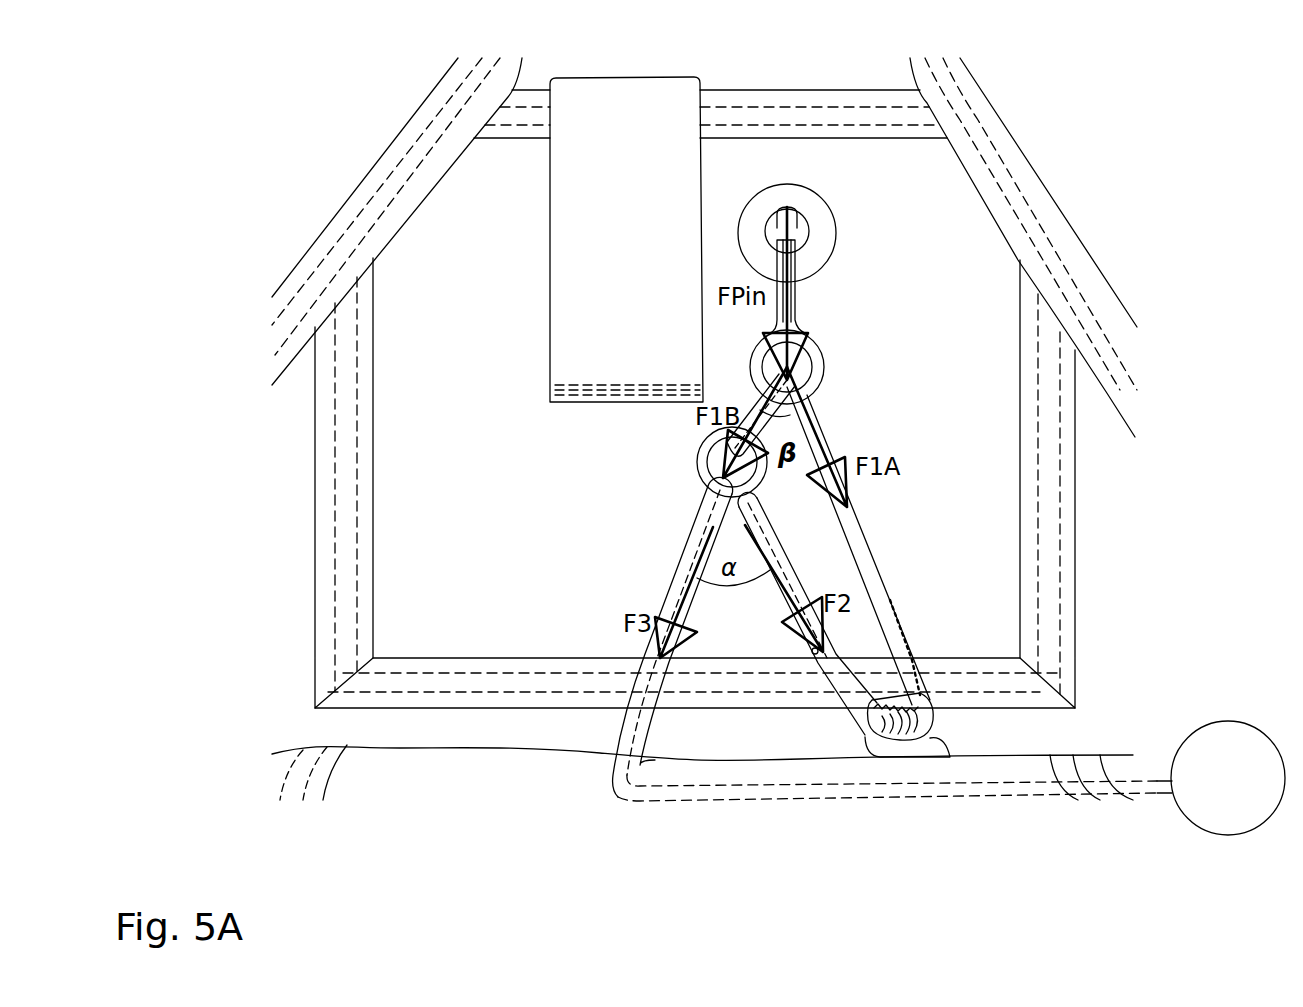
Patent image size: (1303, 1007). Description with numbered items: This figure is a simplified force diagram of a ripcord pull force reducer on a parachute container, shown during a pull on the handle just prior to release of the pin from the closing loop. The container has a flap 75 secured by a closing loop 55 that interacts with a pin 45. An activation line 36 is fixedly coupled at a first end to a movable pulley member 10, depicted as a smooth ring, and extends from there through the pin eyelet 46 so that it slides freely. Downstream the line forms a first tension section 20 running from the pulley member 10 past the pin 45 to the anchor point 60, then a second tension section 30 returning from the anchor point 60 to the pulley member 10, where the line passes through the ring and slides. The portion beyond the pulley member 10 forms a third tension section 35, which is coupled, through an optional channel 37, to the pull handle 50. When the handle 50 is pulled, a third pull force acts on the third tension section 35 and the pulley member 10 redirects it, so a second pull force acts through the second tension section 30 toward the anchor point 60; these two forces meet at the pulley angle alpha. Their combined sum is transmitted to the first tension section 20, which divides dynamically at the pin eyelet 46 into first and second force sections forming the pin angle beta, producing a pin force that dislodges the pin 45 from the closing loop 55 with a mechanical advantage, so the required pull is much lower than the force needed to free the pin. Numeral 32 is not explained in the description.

The flap 75 is at (463, 227).
The closing loop 55 is at (793, 230).
The pin eyelet 46 is at (800, 367).
The pin 45 is at (815, 387).
The movable pulley member 10 is at (698, 461).
The second tension section 30 is at (765, 522).
The activation line 36 is at (690, 547).
The third tension section 35 is at (667, 588).
The first tension section 20 is at (915, 618).
The attachment point 32 is at (813, 652).
The channel 37 is at (728, 793).
The anchor point 60 is at (910, 727).
The pull handle 50 is at (1238, 722).